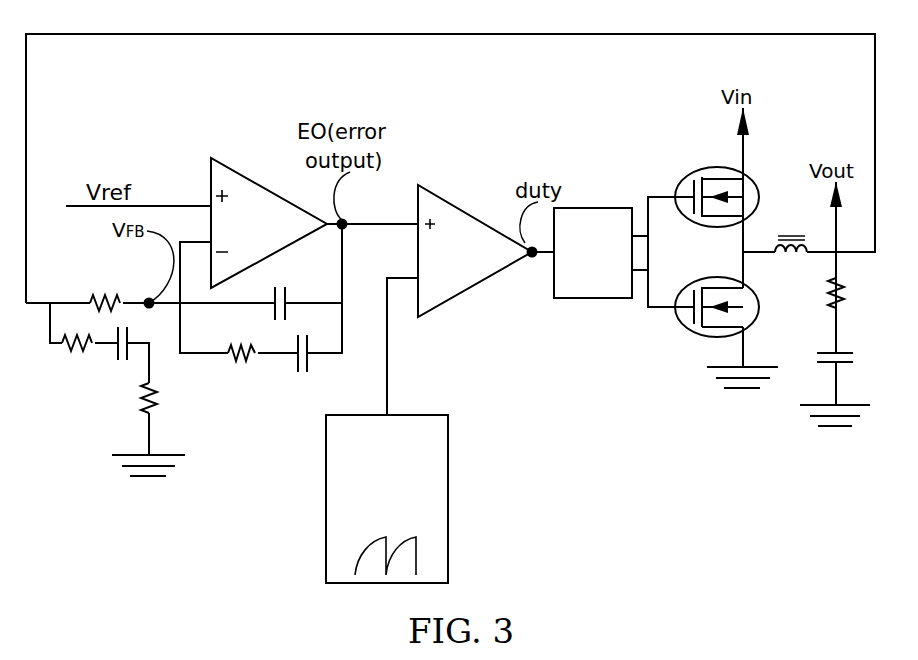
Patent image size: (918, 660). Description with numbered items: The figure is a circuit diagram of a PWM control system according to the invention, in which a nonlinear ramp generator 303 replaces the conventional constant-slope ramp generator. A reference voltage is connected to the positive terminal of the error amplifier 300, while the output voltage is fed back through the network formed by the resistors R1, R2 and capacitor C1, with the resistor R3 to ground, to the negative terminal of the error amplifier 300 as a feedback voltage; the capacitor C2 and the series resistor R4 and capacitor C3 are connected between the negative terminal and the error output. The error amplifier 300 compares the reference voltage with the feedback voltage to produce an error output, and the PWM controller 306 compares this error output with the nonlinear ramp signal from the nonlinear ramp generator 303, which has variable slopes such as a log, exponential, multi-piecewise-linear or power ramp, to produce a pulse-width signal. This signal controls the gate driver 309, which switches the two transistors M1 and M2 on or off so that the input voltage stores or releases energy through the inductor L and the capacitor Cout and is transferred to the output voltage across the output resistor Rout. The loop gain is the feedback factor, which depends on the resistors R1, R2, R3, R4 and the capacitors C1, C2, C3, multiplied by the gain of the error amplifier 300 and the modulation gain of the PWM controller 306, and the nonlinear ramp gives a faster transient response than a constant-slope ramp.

The error amplifier 300 is at (277, 196).
The PWM controller 306 is at (471, 211).
The gate driver 309 is at (611, 290).
The nonlinear ramp generator 303 is at (410, 531).
The resistor R1 is at (76, 362).
The resistor R2 is at (107, 287).
The resistor R3 is at (167, 399).
The resistor R4 is at (245, 371).
The capacitor C1 is at (125, 358).
The capacitor C2 is at (279, 290).
The capacitor C3 is at (303, 366).
The transistor M1 is at (730, 197).
The transistor M2 is at (730, 307).
The inductor L is at (791, 232).
The output resistor Rout is at (860, 293).
The output capacitor Cout is at (859, 360).